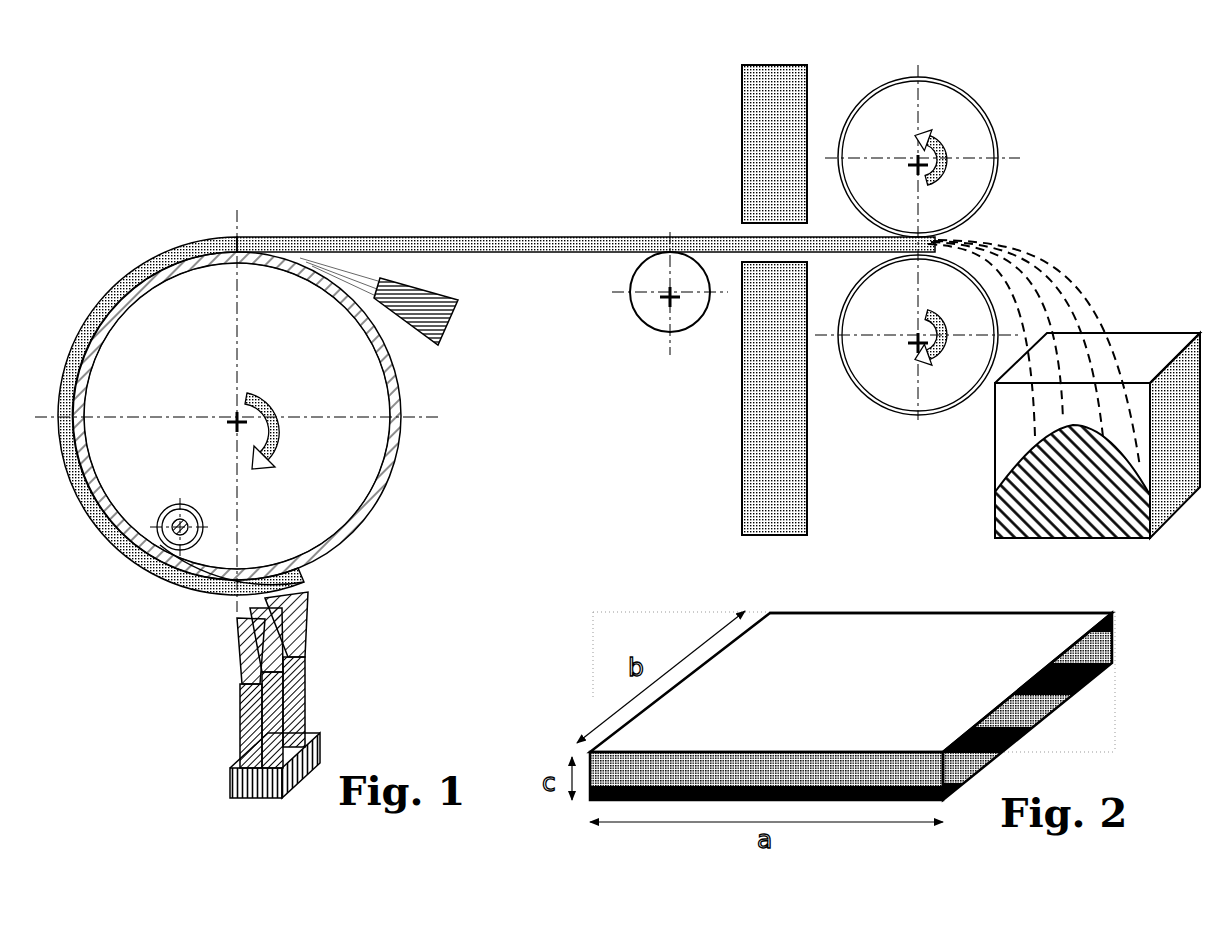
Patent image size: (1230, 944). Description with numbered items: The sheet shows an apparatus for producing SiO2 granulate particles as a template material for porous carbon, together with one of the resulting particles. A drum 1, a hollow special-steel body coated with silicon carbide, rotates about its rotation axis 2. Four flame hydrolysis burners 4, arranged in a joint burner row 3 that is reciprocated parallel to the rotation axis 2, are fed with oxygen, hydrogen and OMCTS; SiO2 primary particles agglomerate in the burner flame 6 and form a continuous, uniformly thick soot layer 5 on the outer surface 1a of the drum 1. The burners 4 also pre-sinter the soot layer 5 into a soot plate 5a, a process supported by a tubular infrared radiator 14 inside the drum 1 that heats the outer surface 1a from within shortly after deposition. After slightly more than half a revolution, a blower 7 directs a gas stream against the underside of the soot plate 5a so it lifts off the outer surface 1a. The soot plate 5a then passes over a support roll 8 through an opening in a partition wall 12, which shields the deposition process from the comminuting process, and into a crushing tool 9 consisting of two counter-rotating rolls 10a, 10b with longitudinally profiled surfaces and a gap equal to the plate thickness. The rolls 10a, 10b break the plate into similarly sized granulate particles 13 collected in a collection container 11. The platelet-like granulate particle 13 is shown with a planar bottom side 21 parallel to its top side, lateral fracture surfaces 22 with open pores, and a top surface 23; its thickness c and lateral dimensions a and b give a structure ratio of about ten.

In FIG. 1, the drum 1 is at (403, 430).
In FIG. 1, the outer surface 1a is at (392, 487).
In FIG. 1, the rotation axis 2 is at (367, 521).
In FIG. 1, the burner row 3 is at (223, 777).
In FIG. 1, the flame hydrolysis burners 4 is at (242, 717).
In FIG. 1, the soot layer 5 is at (217, 597).
In FIG. 1, the soot plate 5a is at (550, 236).
In FIG. 1, the burner flame 6 is at (306, 626).
In FIG. 1, the blower 7 is at (450, 338).
In FIG. 1, the support roll 8 is at (647, 328).
In FIG. 1, the crushing tool 9 is at (965, 298).
In FIG. 1, the roll 10a is at (995, 125).
In FIG. 1, the roll 10b is at (937, 412).
In FIG. 1, the collection container 11 is at (1160, 332).
In FIG. 1, the partition wall 12 is at (742, 410).
In FIG. 1, the granulate particles 13 is at (1103, 270).
In FIG. 2, the granulate particles 13 is at (855, 681).
In FIG. 1, the tubular infrared radiator 14 is at (145, 572).
In FIG. 2, the bottom side 21 is at (1067, 707).
In FIG. 2, the lateral fracture surfaces 22 is at (1133, 668).
In FIG. 2, the top surface 23 is at (1052, 648).